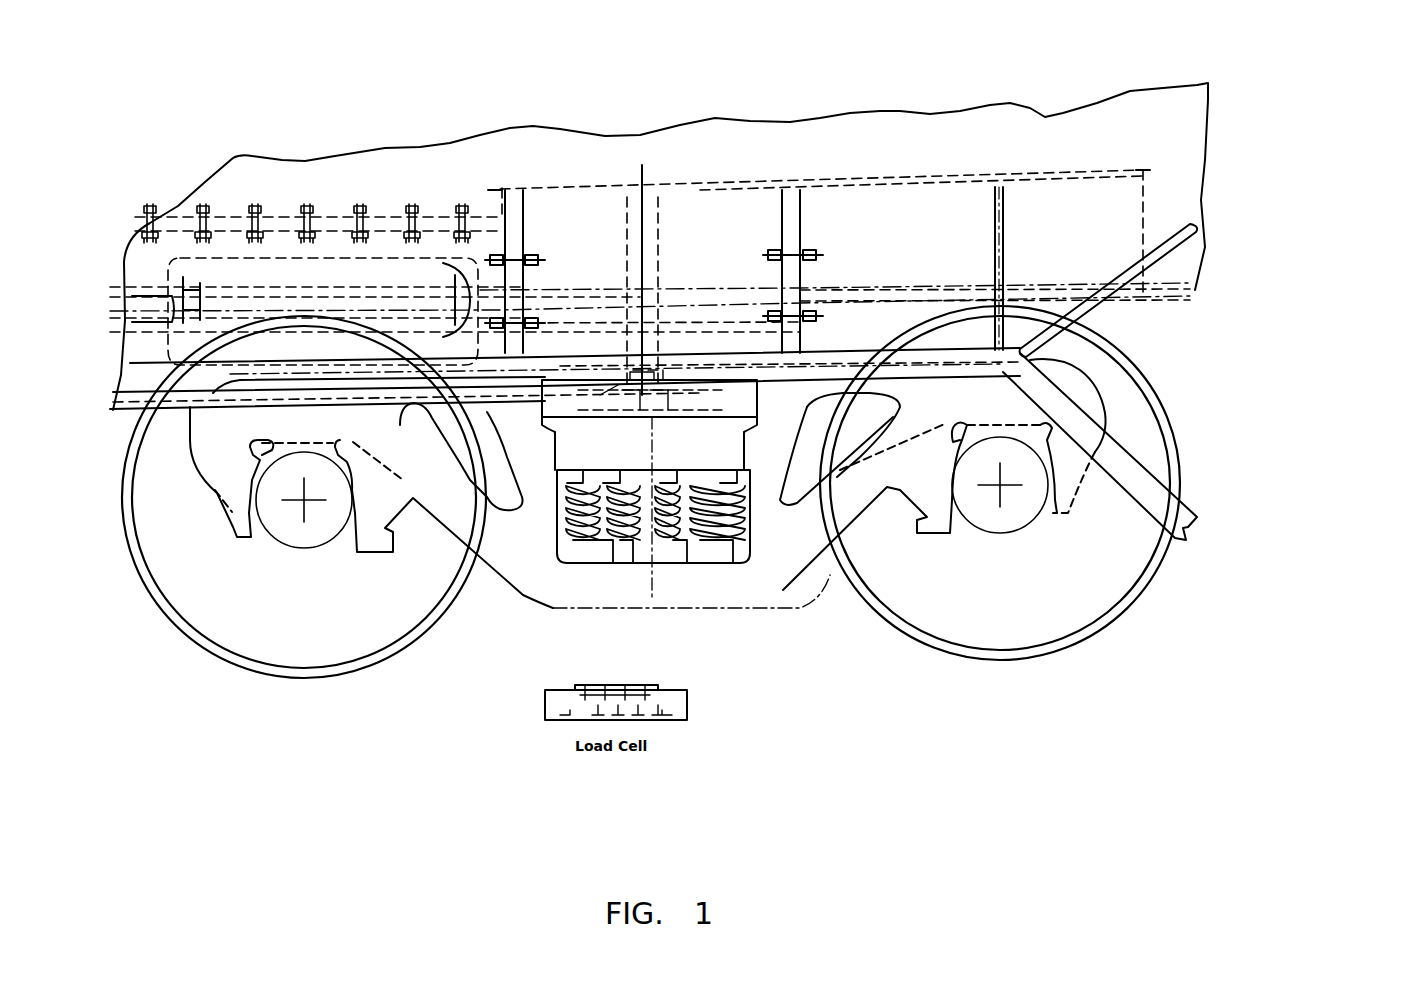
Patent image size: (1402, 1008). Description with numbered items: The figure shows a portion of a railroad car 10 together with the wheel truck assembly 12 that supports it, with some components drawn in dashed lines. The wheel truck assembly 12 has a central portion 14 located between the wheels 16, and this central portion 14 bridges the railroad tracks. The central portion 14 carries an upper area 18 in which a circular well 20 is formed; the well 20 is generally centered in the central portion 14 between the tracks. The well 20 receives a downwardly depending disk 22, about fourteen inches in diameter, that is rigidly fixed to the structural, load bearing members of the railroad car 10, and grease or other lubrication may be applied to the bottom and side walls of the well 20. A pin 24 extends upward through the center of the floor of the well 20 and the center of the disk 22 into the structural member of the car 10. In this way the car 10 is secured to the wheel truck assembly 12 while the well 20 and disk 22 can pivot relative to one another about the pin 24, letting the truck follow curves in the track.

The railroad car 10 is at (1265, 98).
The wheel truck assembly 12 is at (1296, 382).
The central portion 14 is at (522, 594).
The wheels 16 is at (190, 636).
The upper area 18 is at (770, 387).
The circular well 20 is at (720, 400).
The disk 22 is at (613, 397).
The pin 24 is at (628, 260).